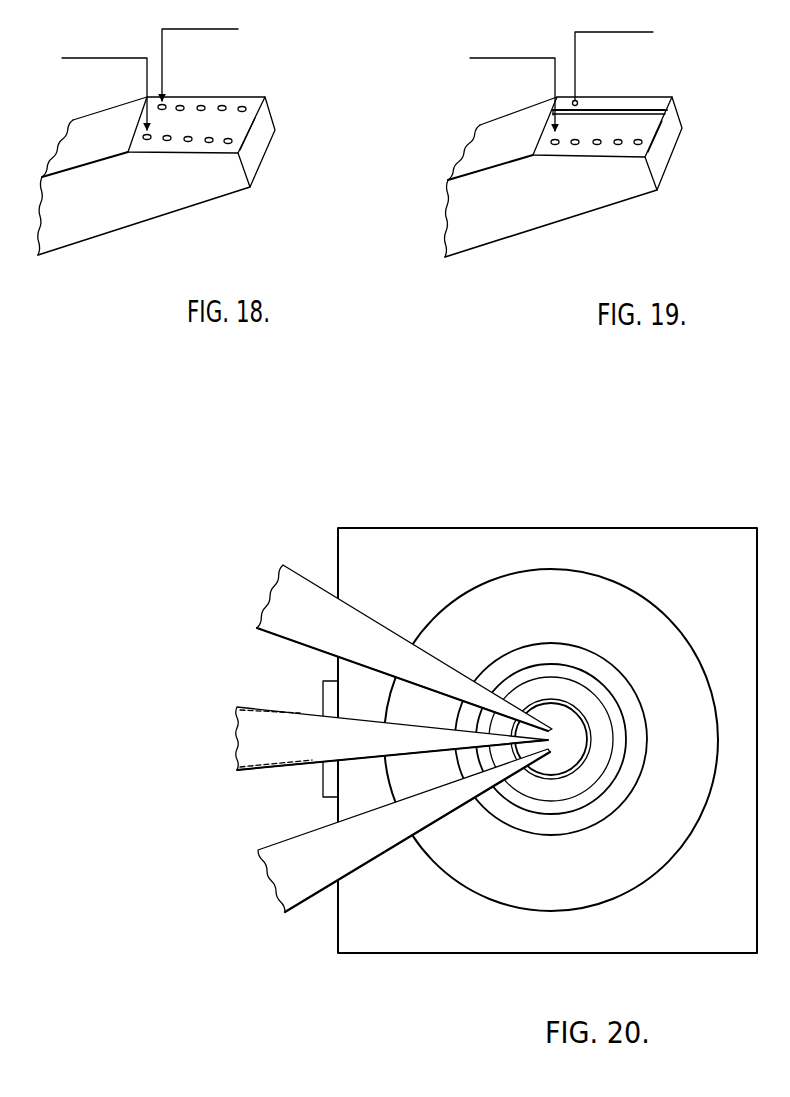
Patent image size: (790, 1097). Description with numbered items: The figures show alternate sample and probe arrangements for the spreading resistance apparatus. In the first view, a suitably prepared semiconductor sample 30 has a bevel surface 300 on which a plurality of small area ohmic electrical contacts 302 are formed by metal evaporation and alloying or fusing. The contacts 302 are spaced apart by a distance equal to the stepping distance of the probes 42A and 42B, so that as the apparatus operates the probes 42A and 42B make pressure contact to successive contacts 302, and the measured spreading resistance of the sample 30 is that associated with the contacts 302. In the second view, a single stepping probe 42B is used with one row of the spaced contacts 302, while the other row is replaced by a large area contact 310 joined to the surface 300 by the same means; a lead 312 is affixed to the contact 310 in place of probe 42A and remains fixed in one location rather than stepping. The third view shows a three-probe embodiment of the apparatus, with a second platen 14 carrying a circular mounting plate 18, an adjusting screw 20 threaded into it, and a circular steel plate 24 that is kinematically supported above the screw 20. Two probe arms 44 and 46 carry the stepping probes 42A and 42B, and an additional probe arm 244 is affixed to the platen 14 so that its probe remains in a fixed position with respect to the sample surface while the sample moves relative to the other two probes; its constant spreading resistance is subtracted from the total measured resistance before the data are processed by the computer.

In FIG. 18, the sample 30 is at (267, 108).
In FIG. 19, the sample 30 is at (658, 163).
In FIG. 18, the bevel surface 300 is at (243, 127).
In FIG. 19, the bevel surface 300 is at (651, 126).
In FIG. 18, the small area ohmic electrical contacts 302 is at (204, 106).
In FIG. 19, the small area ohmic electrical contacts 302 is at (597, 145).
In FIG. 18, the probe 42A is at (165, 104).
In FIG. 18, the probe 42B is at (142, 137).
In FIG. 19, the probe 42B is at (540, 140).
In FIG. 19, the large area contact 310 is at (653, 103).
In FIG. 19, the lead 312 is at (571, 45).
In FIG. 20, the second platen 14 is at (692, 540).
In FIG. 20, the circular mounting plate 18 is at (620, 808).
In FIG. 20, the screw 20 is at (618, 703).
In FIG. 20, the circular steel plate 24 is at (613, 738).
In FIG. 20, the lower arm 44 is at (372, 842).
In FIG. 20, the upper arm 46 is at (363, 627).
In FIG. 20, the probe arm 244 is at (278, 727).